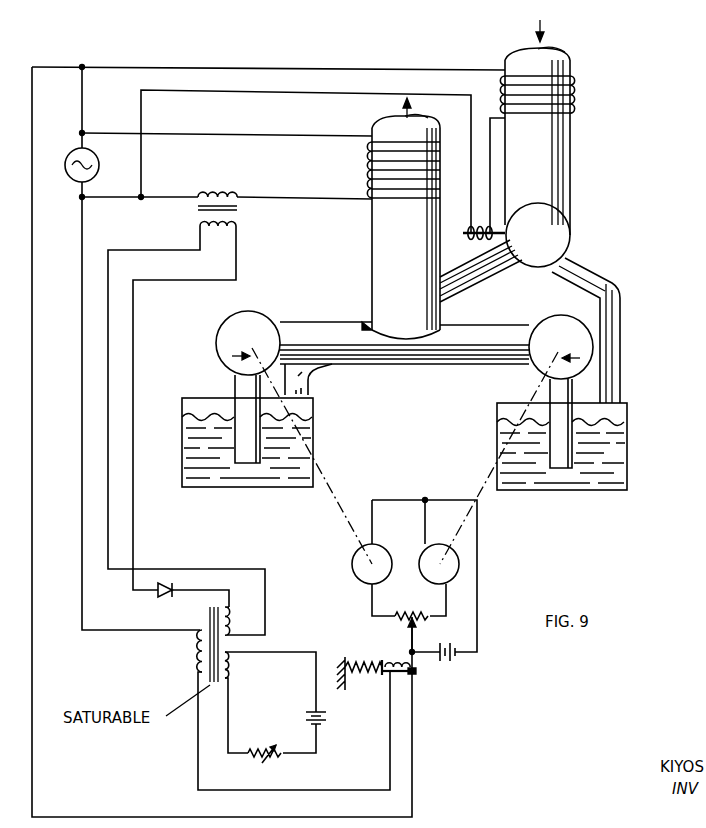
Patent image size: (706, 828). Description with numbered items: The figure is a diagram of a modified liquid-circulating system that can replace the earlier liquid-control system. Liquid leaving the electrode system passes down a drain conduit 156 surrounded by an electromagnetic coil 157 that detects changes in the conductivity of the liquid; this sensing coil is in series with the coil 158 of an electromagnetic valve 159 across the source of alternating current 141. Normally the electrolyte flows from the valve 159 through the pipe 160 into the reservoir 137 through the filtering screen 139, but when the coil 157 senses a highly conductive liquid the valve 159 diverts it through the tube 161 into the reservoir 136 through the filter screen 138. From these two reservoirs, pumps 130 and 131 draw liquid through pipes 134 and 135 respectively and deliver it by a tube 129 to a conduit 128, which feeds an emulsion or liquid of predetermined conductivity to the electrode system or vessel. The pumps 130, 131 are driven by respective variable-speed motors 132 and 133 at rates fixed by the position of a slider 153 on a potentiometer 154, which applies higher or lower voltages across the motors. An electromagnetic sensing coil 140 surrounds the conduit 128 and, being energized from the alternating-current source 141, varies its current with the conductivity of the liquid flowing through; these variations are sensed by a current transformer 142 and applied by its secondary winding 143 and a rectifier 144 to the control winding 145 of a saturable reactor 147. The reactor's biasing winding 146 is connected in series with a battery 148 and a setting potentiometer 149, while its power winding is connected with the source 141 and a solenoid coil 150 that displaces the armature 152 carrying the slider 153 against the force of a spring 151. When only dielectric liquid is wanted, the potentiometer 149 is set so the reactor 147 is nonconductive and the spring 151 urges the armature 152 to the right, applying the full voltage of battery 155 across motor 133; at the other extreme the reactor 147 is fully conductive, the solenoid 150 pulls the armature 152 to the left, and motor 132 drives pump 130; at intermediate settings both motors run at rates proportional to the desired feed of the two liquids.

The conduit 128 is at (372, 251).
The tube 129 is at (406, 370).
The pump 130 is at (220, 322).
The pump 131 is at (563, 316).
The variable-speed motor 132 is at (352, 576).
The variable-speed motor 133 is at (448, 558).
The pipe 134 is at (234, 378).
The pipe 135 is at (570, 474).
The reservoir 136 is at (182, 452).
The reservoir 137 is at (628, 447).
The filter screen 138 is at (222, 415).
The filtering screen 139 is at (612, 421).
The electromagnetic sensing coil 140 is at (372, 148).
The source of alternating current 141 is at (71, 152).
The current transformer 142 is at (216, 195).
The secondary winding 143 is at (214, 224).
The rectifier 144 is at (160, 594).
The saturable reactor winding 145 is at (229, 613).
The biasing winding 146 is at (236, 674).
The saturable reactor 147 is at (196, 651).
The battery 148 is at (326, 722).
The setting potentiometer 149 is at (275, 759).
The solenoid coil 150 is at (404, 676).
The spring 151 is at (370, 660).
The armature 152 is at (418, 676).
The slider 153 is at (410, 641).
The potentiometer 154 is at (408, 612).
The battery 155 is at (456, 660).
The drain conduit 156 is at (566, 52).
The electromagnetic coil 157 is at (575, 82).
The coil 158 is at (480, 243).
The electromagnetic valve 159 is at (560, 228).
The pipe 160 is at (622, 290).
The tube 161 is at (455, 294).